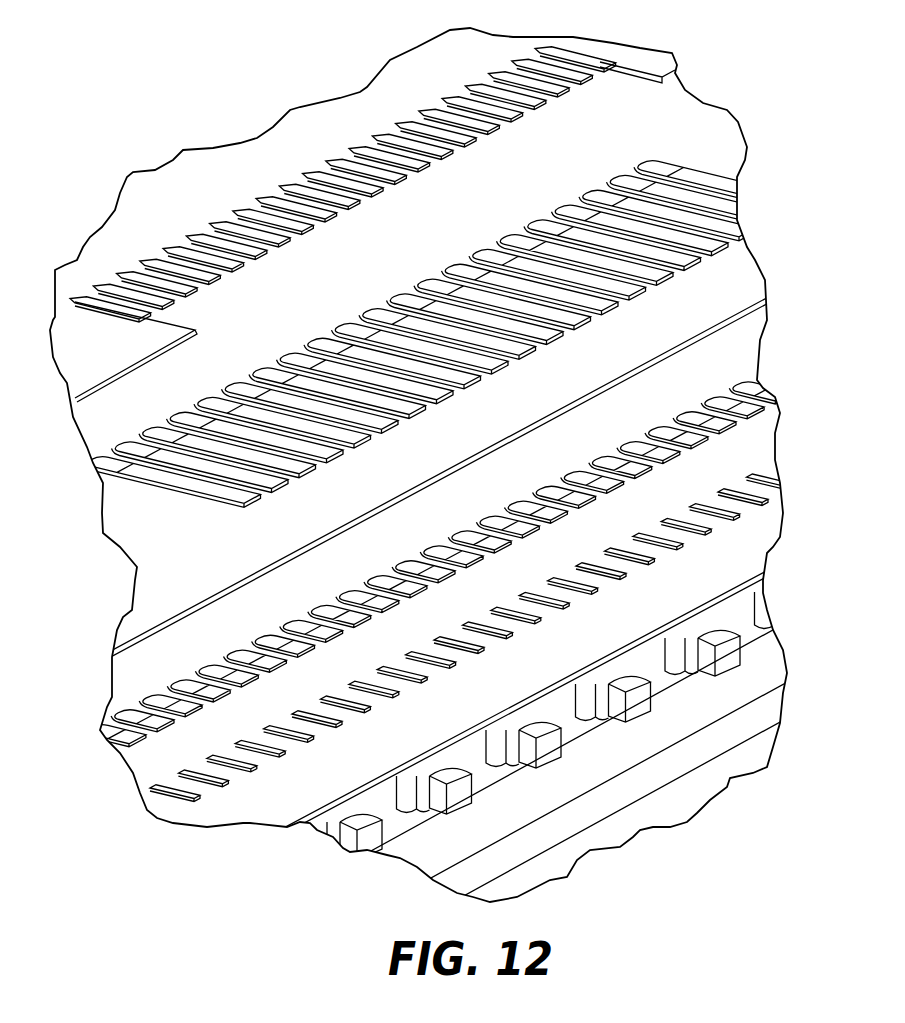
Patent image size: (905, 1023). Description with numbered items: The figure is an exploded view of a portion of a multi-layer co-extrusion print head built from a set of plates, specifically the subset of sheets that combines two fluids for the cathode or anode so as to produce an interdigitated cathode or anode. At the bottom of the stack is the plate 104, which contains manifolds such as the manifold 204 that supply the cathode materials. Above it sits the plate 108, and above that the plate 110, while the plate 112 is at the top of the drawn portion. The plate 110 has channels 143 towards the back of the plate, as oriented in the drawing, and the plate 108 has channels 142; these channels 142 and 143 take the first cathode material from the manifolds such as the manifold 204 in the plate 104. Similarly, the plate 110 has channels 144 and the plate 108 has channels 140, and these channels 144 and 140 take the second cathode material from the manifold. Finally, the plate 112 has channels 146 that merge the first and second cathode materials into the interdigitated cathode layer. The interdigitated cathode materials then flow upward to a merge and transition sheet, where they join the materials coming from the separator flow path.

The plate 104 is at (405, 852).
The plate 108 is at (522, 686).
The plate 110 is at (471, 441).
The plate 112 is at (409, 225).
The channels 140 is at (252, 768).
The channels 142 is at (247, 677).
The channels 143 is at (152, 421).
The channels 144 is at (318, 474).
The channels 146 is at (293, 233).
The manifold 204 is at (347, 840).